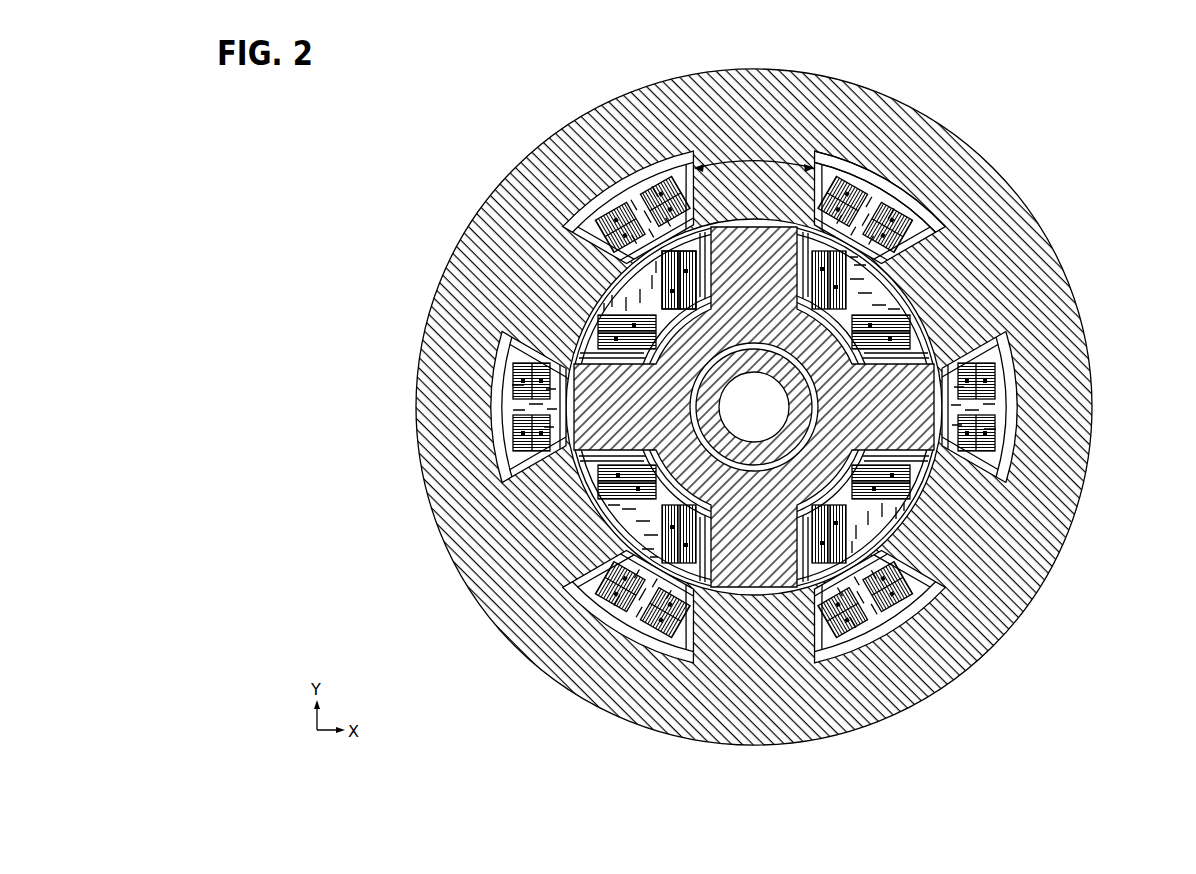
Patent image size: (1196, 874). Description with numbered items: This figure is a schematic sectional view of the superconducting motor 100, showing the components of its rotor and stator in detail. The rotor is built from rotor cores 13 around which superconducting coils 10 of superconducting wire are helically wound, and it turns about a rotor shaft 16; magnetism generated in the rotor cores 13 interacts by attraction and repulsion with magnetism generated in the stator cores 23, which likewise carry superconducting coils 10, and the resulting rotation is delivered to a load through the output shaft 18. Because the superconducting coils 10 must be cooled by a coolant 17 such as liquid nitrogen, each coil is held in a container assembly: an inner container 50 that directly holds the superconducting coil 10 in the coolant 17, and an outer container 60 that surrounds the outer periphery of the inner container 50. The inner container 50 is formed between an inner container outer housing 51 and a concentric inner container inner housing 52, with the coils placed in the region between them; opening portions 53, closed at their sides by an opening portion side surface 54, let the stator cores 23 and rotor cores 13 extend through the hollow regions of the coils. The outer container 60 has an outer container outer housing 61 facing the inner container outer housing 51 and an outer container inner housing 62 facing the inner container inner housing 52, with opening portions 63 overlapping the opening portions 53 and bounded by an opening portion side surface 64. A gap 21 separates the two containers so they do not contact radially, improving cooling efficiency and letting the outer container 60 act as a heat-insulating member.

The superconducting motor 100 is at (757, 388).
The stator core 23 is at (952, 520).
The rotor core 13 is at (595, 410).
The output shaft 18 is at (792, 411).
The superconducting coil 10 is at (523, 373).
The rotor shaft 16 is at (626, 489).
The coolant 17 is at (893, 196).
The inner container 50 is at (902, 192).
The outer container 60 is at (930, 210).
The inner container outer housing 51 is at (990, 391).
The inner container inner housing 52 is at (958, 405).
The opening portion 53 is at (537, 358).
The opening portion side surface 54 is at (982, 470).
The outer container outer housing 61 is at (1013, 364).
The outer container inner housing 62 is at (1007, 332).
The opening portion 63 is at (755, 161).
The opening portion side surface 64 is at (998, 494).
The gap 21 is at (1003, 446).